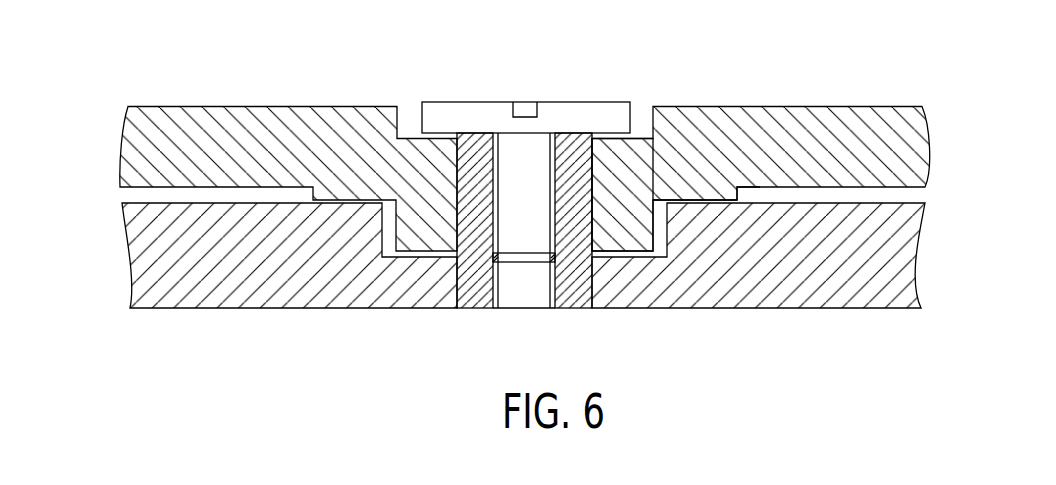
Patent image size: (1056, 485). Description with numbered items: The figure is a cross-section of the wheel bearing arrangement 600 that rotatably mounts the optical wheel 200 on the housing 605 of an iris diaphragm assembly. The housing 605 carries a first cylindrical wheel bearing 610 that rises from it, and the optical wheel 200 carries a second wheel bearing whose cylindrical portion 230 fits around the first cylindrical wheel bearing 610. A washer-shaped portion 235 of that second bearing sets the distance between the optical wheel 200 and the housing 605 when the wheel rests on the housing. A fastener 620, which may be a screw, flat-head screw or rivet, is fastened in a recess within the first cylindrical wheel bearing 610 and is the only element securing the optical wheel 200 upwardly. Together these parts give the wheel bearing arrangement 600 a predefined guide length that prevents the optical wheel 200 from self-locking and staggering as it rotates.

The wheel bearing arrangement 600 is at (586, 173).
The optical wheel 200 is at (838, 125).
The housing 605 is at (885, 265).
The first cylindrical wheel bearing 610 is at (573, 158).
The fastener 620 is at (555, 107).
The cylindrical portion 230 is at (617, 158).
The washer-shaped portion 235 is at (690, 190).